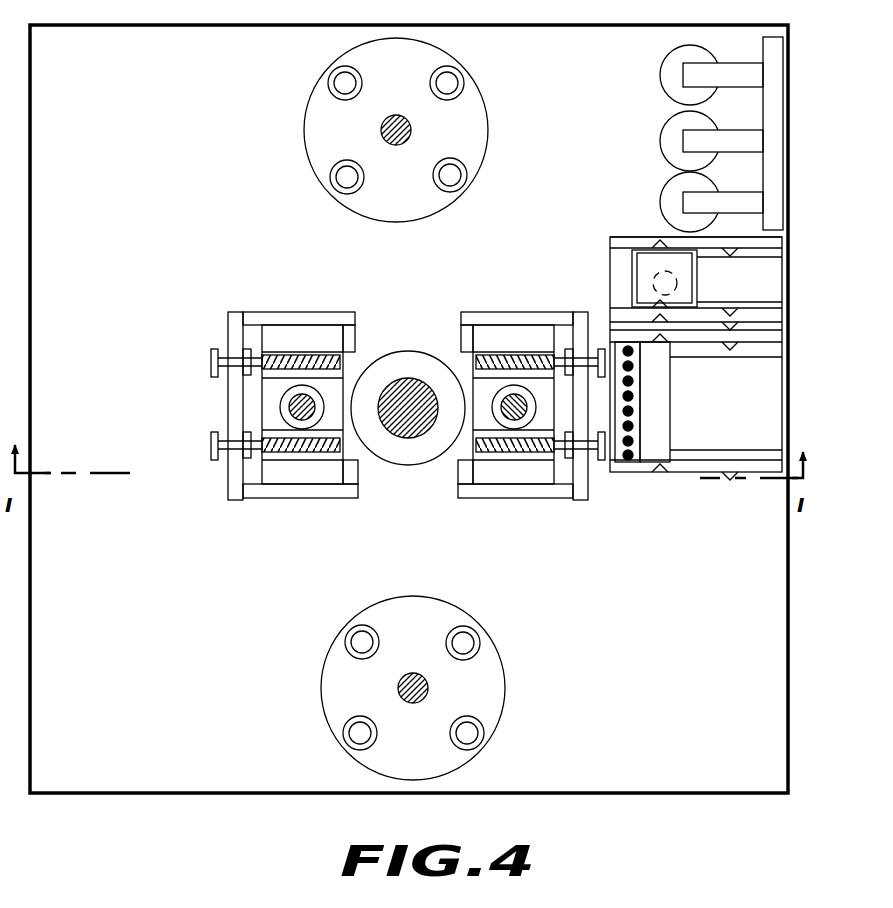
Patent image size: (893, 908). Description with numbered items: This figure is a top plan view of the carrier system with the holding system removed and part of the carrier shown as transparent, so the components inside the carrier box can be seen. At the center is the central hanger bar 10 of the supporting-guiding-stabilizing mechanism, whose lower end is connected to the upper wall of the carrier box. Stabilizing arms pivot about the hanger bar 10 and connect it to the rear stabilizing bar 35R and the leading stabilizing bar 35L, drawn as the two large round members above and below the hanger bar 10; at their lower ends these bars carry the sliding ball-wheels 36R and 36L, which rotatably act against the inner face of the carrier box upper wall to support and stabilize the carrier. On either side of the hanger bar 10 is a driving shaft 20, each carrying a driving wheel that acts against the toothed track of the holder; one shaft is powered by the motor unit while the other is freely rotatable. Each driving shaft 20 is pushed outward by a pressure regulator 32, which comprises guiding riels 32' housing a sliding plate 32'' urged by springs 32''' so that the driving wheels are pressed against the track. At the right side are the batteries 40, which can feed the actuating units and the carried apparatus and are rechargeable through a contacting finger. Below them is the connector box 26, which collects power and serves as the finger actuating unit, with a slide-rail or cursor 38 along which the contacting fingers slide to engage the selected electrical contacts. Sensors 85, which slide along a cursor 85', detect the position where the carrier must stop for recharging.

The central hanger bar 10 is at (411, 386).
The driving shaft 20 is at (284, 412).
The connector box 26 is at (743, 425).
The pressure regulator 32 is at (359, 383).
The guiding riels 32' is at (299, 309).
The sliding plate 32'' is at (218, 390).
The springs 32''' is at (242, 338).
The rear stabilizing bar 35R is at (382, 131).
The sliding ball-wheels 36R is at (336, 181).
The leading stabilizing bar 35L is at (430, 690).
The sliding ball-wheels 36L is at (478, 736).
The slide-rail or cursor 38 is at (746, 338).
The batteries 40 is at (673, 144).
The sensors 85 is at (624, 278).
The cursor 85' is at (683, 217).